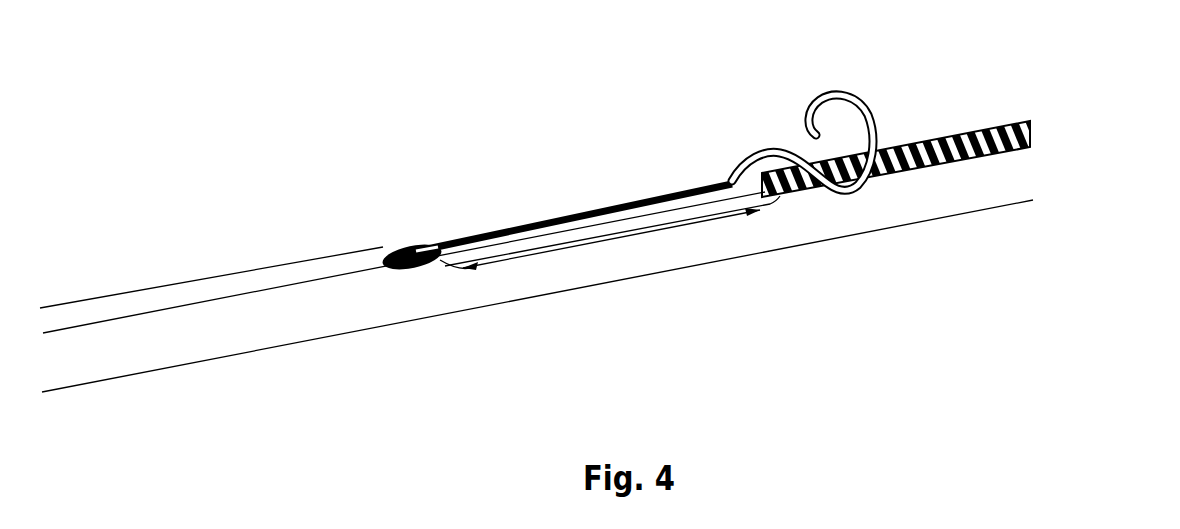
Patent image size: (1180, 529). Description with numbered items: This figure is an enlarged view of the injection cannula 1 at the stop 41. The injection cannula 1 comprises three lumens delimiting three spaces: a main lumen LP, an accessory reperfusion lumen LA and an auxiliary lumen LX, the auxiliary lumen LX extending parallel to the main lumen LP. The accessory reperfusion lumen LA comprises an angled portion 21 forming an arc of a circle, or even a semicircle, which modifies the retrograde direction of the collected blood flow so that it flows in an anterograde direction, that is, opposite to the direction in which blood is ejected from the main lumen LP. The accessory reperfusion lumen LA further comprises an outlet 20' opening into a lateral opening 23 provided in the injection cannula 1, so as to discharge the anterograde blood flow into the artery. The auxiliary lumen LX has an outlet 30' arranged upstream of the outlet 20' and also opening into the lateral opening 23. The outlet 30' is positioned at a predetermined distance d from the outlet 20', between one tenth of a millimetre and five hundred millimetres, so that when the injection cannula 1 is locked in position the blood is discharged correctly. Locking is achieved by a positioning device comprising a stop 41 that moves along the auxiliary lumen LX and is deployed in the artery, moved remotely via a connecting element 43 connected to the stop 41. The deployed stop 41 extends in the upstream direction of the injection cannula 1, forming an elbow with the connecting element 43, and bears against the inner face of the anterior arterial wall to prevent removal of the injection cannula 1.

The injection cannula 1 is at (592, 227).
The outlet of the accessory reperfusion lumen 20' is at (609, 323).
The angled portion 21 is at (388, 242).
The lateral opening 23 is at (530, 215).
The outlet of the auxiliary lumen 30' is at (758, 106).
The stop 41 is at (830, 97).
The connecting element 43 is at (965, 118).
The accessory reperfusion lumen LA is at (1035, 124).
The auxiliary lumen LX is at (1035, 141).
The main lumen LP is at (1017, 176).
The predetermined distance d is at (611, 240).